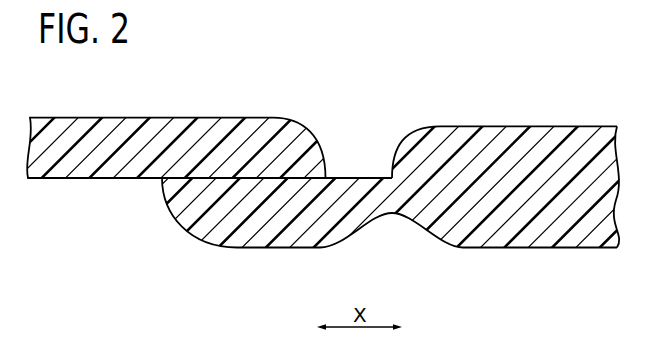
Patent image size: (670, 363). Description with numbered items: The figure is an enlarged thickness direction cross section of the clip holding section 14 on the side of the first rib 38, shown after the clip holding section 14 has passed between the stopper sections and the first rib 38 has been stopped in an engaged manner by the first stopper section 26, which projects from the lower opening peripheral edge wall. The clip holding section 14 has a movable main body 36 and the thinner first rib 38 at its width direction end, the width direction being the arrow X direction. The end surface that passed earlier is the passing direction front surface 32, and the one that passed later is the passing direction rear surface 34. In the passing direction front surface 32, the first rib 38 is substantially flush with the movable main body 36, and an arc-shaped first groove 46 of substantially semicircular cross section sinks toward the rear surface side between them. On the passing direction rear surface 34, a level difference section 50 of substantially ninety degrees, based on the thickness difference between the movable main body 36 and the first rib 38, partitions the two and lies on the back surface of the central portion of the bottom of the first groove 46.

The clip holding section 14 is at (611, 123).
The first stopper section 26 is at (308, 134).
The passing direction front surface 32 is at (366, 193).
The passing direction rear surface 34 is at (522, 125).
The movable main body 36 is at (568, 218).
The first rib 38 is at (203, 230).
The first groove 46 is at (392, 215).
The level difference section 50 is at (403, 135).